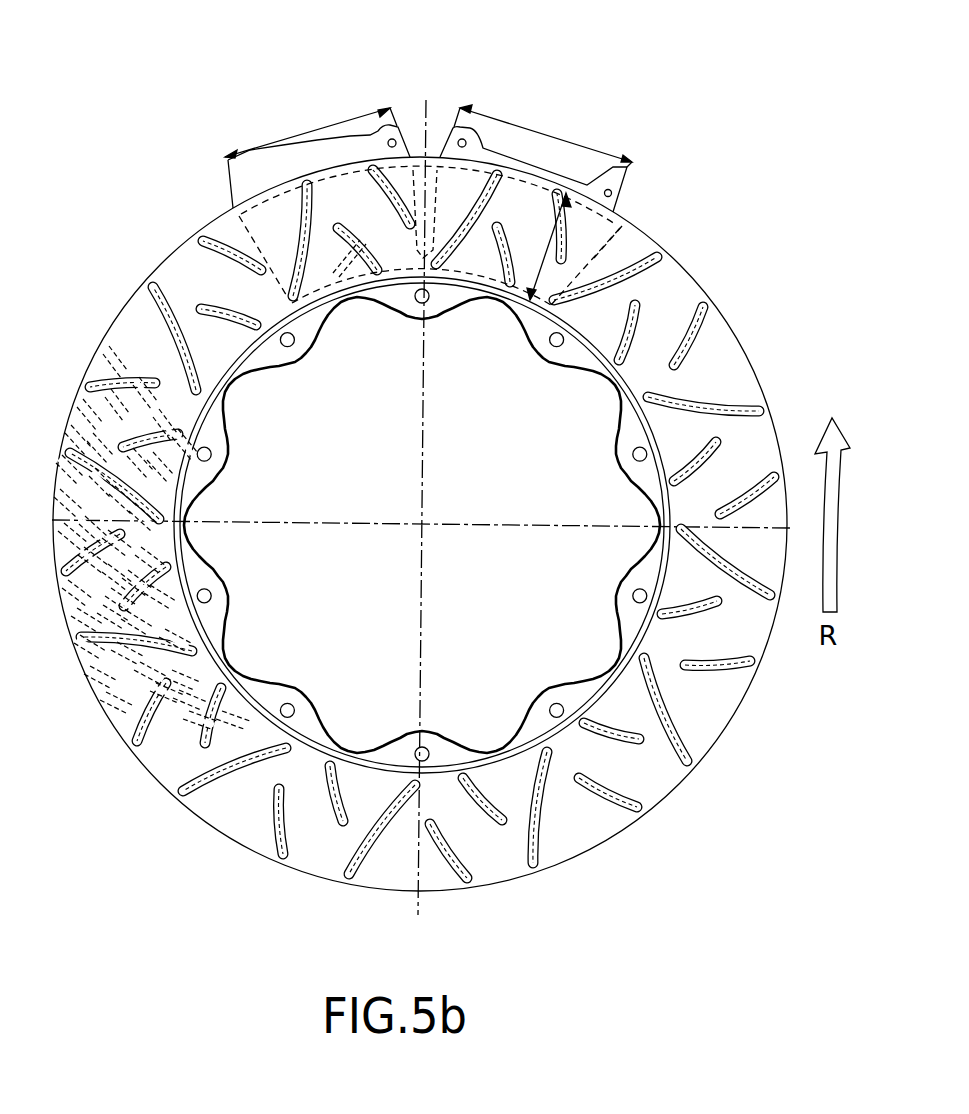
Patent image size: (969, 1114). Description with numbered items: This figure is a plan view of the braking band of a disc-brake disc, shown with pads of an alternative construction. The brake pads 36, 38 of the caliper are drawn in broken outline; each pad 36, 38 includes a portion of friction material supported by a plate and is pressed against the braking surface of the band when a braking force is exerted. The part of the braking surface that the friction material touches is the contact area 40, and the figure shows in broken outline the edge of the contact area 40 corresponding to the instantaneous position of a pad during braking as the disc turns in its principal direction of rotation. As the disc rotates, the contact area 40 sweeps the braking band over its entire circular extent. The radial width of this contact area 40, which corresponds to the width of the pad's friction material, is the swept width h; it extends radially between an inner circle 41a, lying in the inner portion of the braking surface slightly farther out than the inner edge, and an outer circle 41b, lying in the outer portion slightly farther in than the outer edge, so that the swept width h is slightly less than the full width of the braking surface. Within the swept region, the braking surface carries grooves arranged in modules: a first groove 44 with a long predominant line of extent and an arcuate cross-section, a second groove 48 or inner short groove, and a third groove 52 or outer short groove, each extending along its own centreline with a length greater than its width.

The pad 36 is at (266, 214).
The pad 38 is at (640, 215).
The contact area 40 is at (590, 232).
The inner circle 41a is at (456, 305).
The outer circle 41b is at (634, 163).
The first groove 44 is at (312, 186).
The second groove 48 is at (358, 236).
The third groove 52 is at (405, 158).
The swept width h is at (548, 200).